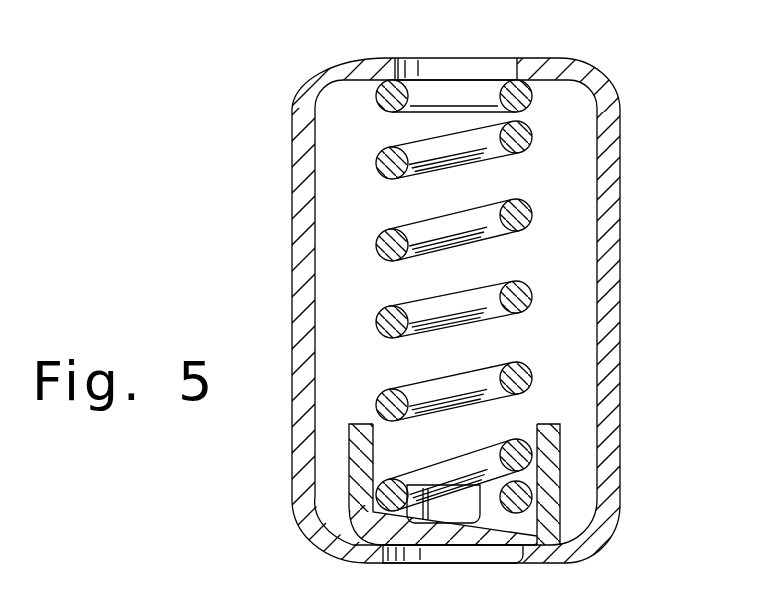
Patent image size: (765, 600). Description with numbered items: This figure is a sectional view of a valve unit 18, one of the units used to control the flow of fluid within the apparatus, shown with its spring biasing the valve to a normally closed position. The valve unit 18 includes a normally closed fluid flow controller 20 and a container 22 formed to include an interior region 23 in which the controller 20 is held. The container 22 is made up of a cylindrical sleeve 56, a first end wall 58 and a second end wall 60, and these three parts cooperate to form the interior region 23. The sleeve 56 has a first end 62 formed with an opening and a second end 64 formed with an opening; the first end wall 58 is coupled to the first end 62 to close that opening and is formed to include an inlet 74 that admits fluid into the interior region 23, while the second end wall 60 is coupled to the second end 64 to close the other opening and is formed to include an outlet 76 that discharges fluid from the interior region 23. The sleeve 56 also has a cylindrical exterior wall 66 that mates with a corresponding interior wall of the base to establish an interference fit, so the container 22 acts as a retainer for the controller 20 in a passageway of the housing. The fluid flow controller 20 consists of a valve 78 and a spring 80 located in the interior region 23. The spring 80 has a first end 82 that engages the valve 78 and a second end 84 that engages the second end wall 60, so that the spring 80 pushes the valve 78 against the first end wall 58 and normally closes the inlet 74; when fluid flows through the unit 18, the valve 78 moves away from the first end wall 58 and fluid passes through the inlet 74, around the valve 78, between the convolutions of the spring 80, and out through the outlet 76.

The valve unit 18 is at (212, 98).
The fluid flow controller 20 is at (554, 417).
The container 22 is at (624, 185).
The interior region 23 is at (320, 165).
The cylindrical sleeve 56 is at (625, 275).
The first end wall 58 is at (590, 548).
The second end wall 60 is at (550, 62).
The first end 62 is at (618, 512).
The second end 64 is at (622, 100).
The cylindrical exterior wall 66 is at (300, 287).
The inlet 74 is at (526, 562).
The outlet 76 is at (513, 68).
The valve 78 is at (350, 462).
The spring 80 is at (463, 296).
The first end 82 is at (562, 481).
The second end 84 is at (540, 108).